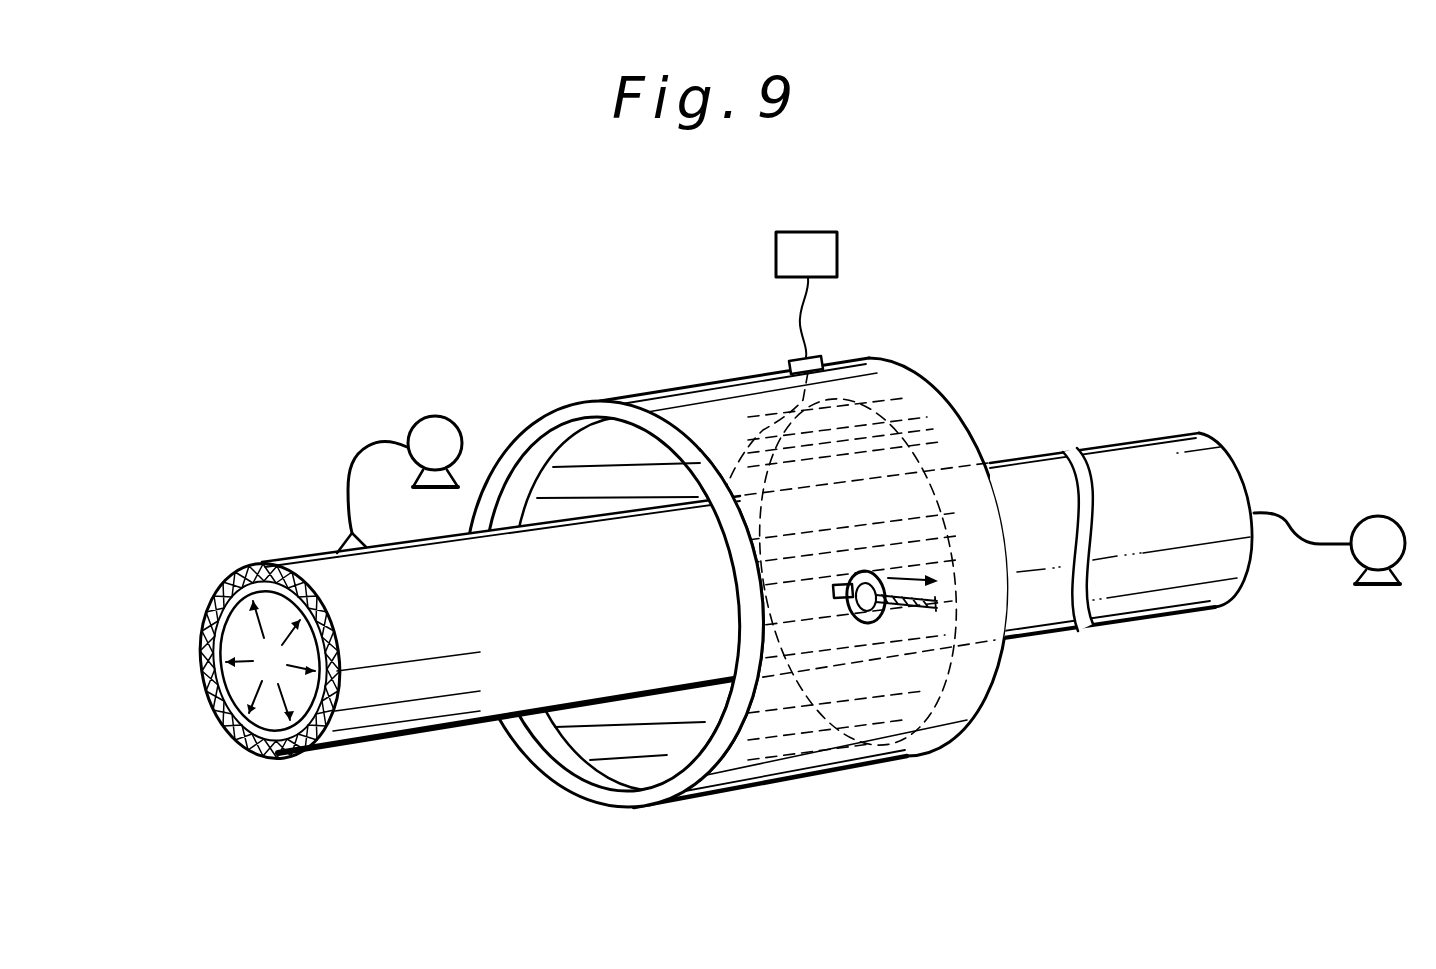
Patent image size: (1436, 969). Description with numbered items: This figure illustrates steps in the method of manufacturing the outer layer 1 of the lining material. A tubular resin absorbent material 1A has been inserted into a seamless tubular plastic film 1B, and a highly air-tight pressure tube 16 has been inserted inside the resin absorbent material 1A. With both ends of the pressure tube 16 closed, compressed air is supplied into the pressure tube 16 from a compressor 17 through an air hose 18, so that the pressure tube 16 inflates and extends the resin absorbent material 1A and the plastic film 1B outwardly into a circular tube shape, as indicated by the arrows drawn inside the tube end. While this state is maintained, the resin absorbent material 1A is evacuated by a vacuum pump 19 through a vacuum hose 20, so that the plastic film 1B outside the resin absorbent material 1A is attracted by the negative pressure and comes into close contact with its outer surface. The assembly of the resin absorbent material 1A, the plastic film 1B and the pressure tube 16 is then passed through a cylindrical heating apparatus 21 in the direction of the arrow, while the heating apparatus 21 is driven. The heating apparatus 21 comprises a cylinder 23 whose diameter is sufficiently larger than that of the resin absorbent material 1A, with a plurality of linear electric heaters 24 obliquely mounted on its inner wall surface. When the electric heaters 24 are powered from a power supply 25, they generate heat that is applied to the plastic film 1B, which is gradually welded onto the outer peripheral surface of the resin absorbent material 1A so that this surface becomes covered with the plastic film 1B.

The outer layer 1 is at (168, 521).
The tubular resin absorbent material 1A is at (238, 567).
The seamless tubular plastic film 1B is at (222, 610).
The pressure tube 16 is at (237, 674).
The compressor 17 is at (1381, 516).
The air hose 18 is at (1281, 512).
The vacuum pump 19 is at (435, 416).
The vacuum hose 20 is at (346, 466).
The cylindrical heating apparatus 21 is at (688, 378).
The cylinder 23 is at (562, 408).
The linear electric heaters 24 is at (648, 500).
The power supply 25 is at (802, 248).